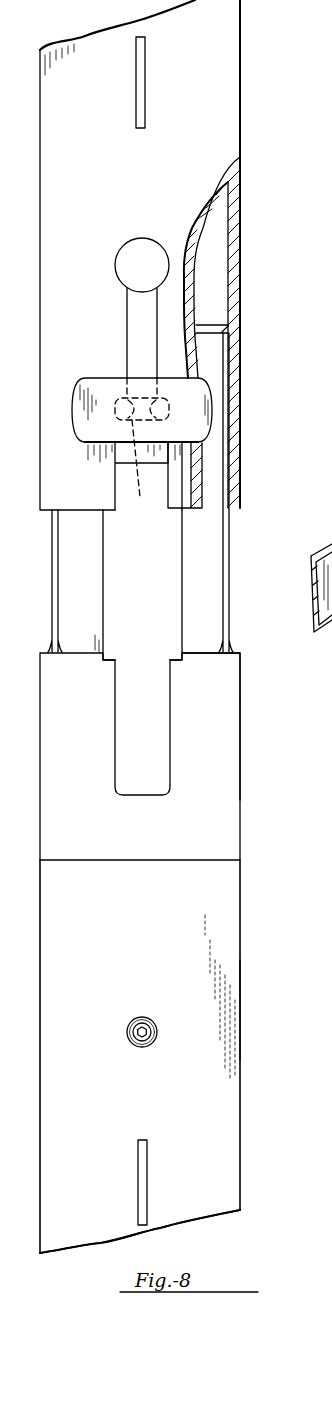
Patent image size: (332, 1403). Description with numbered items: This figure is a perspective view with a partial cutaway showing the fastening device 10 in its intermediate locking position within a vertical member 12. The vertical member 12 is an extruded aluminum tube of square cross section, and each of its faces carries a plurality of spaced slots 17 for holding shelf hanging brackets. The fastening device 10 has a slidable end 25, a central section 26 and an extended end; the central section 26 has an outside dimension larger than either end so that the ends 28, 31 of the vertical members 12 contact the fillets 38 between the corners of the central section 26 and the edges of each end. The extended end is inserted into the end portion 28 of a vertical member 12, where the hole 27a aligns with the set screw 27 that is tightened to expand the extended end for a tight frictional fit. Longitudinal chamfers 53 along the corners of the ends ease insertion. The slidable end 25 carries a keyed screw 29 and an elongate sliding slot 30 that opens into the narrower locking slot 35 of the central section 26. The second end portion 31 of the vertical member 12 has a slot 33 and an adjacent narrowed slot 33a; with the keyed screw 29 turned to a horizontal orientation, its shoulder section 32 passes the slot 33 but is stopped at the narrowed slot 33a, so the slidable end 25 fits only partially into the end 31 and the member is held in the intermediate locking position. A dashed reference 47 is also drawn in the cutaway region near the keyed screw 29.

The fastening device 10 is at (243, 751).
The vertical member 12 is at (240, 228).
The slot 17 is at (145, 117).
The slidable end 25 is at (216, 464).
The central section 26 is at (243, 832).
The set screw 27 is at (130, 1025).
The hole 27a is at (138, 1047).
The end portion 28 is at (242, 1020).
The keyed screw 29 is at (192, 394).
The sliding slot 30 is at (158, 627).
The end portion 31 is at (240, 123).
The shoulder section 32 is at (130, 397).
The slot 33 is at (123, 490).
The narrowed slot 33a is at (133, 303).
The locking slot 35 is at (156, 755).
The fillet 38 is at (236, 652).
The pin 47 is at (146, 471).
The longitudinal chamfer 53 is at (230, 527).